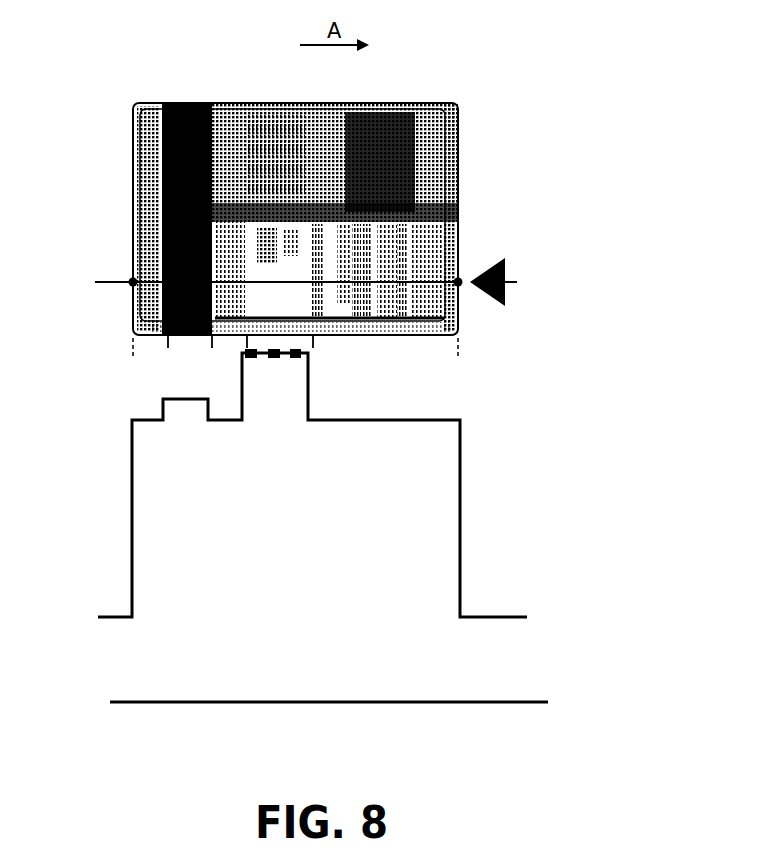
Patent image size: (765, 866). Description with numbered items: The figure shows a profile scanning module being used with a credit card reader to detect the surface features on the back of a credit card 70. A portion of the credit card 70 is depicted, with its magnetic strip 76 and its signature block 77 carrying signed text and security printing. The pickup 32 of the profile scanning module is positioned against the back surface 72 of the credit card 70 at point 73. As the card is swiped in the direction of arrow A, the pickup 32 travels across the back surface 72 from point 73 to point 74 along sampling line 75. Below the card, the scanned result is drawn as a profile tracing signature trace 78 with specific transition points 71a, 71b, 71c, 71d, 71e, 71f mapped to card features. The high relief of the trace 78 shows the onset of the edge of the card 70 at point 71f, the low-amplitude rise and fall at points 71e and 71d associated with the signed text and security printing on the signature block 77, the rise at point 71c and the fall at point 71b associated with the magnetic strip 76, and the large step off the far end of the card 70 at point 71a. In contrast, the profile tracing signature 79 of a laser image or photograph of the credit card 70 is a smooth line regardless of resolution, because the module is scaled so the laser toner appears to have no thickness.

The credit card 70 is at (383, 103).
The back surface 72 is at (422, 245).
The point 73 is at (460, 279).
The point 74 is at (131, 278).
The sampling line 75 is at (108, 284).
The magnetic strip 76 is at (178, 102).
The signature block 77 is at (265, 112).
The pickup 32 is at (488, 298).
The profile tracing signature trace 78 is at (503, 616).
The profile tracing signature 79 is at (488, 701).
The transition point 71a is at (134, 366).
The transition point 71b is at (168, 354).
The transition point 71c is at (210, 361).
The transition point 71d is at (273, 361).
The transition point 71e is at (330, 354).
The transition point 71f is at (462, 356).